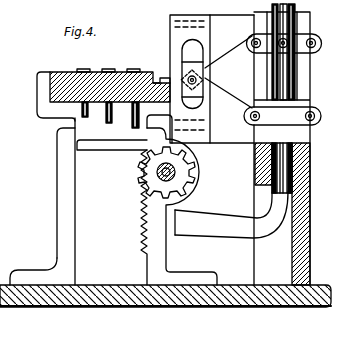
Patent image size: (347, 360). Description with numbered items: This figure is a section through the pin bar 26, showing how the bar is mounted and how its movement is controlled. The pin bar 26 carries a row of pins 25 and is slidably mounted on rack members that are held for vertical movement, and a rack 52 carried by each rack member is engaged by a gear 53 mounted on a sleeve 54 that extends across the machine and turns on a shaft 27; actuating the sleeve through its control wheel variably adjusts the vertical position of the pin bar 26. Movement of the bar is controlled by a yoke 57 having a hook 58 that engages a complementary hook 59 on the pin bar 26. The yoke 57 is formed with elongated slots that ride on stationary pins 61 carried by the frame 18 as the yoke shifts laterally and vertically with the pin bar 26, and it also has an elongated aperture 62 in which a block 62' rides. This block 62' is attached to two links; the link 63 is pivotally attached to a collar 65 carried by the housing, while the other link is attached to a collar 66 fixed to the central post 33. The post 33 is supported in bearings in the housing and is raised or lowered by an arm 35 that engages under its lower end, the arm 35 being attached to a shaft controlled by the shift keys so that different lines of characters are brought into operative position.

The frame 18 is at (225, 71).
The pins 25 is at (134, 128).
The pin bar 26 is at (59, 72).
The shaft 27 is at (176, 171).
The central post 33 is at (292, 180).
The arm 35 is at (272, 222).
The rack 52 is at (140, 230).
The gear 53 is at (147, 185).
The sleeve 54 is at (176, 176).
The yoke 57 is at (175, 33).
The hook 58 is at (157, 80).
The complementary hook 59 is at (160, 128).
The stationary pins 61 is at (240, 50).
The elongated aperture 62 is at (207, 71).
The block 62' is at (228, 90).
The link 63 is at (206, 110).
The collar 65 is at (265, 124).
The collar 66 is at (302, 50).